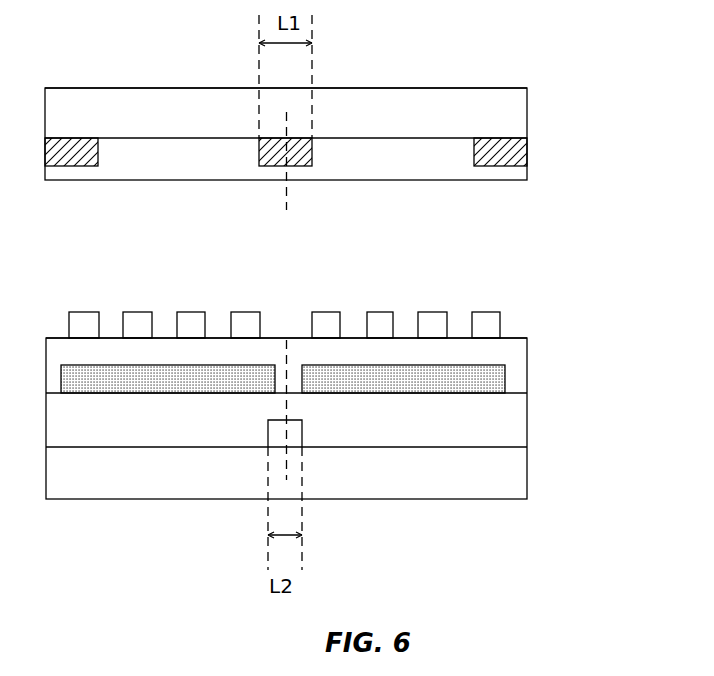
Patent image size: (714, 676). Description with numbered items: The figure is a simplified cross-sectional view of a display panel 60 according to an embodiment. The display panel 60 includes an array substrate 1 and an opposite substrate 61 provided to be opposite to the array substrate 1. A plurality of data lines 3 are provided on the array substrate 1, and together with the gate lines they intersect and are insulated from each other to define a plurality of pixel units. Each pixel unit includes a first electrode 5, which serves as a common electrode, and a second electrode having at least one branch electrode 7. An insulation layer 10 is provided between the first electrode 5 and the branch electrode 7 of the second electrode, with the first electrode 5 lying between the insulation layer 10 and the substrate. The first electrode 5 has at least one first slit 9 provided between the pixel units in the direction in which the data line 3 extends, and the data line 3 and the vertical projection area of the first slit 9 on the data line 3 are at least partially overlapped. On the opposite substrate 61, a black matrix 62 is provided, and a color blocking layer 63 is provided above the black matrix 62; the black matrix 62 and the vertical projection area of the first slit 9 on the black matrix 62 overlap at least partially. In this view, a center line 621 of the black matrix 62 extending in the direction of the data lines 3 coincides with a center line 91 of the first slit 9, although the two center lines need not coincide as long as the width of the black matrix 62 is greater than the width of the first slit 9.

The display panel 60 is at (636, 58).
The opposite substrate 61 is at (289, 69).
The black matrix 62 is at (286, 107).
The color blocking layer 63 is at (178, 107).
The center line of the black matrix 621 is at (287, 112).
The array substrate 1 is at (336, 418).
The insulation layer 10 is at (328, 329).
The first electrode 5 is at (347, 359).
The branch electrode 7 is at (432, 312).
The first slit 9 is at (286, 329).
The center line of the first slit 91 is at (285, 385).
The data line 3 is at (306, 400).